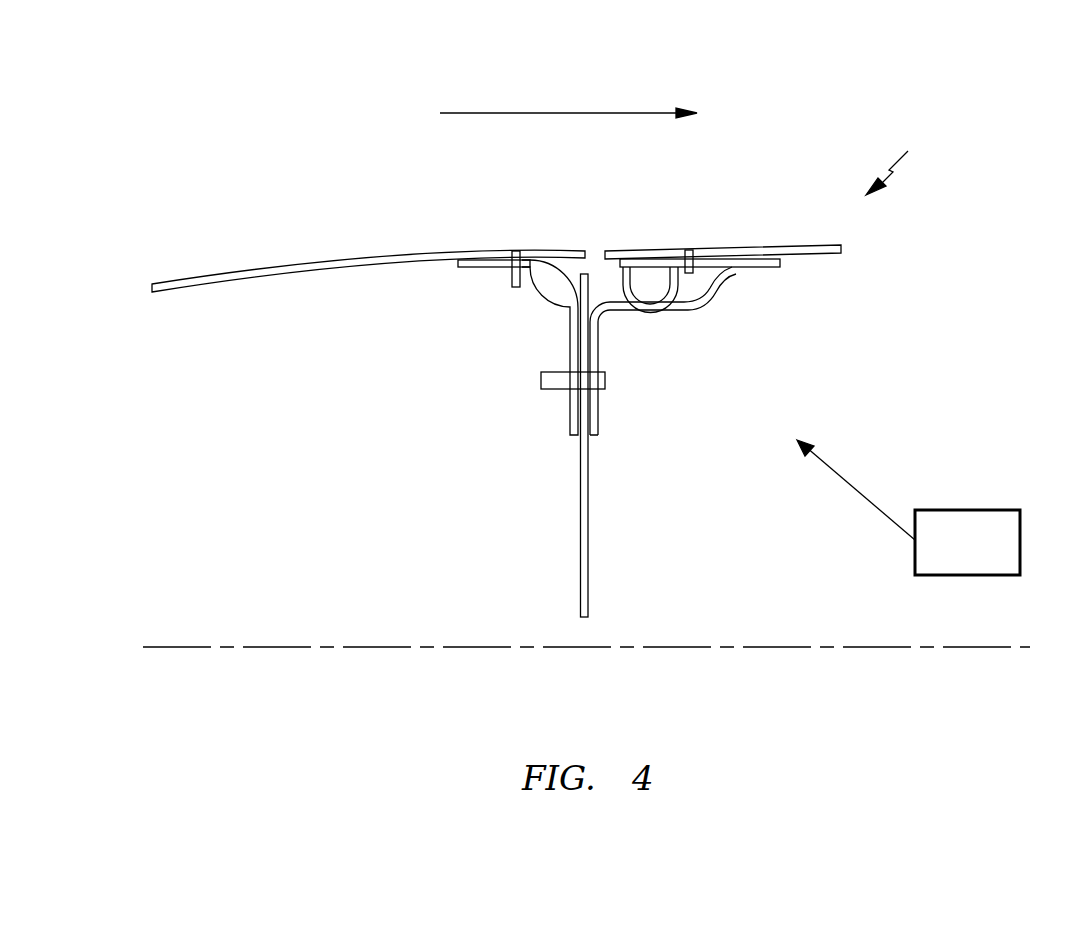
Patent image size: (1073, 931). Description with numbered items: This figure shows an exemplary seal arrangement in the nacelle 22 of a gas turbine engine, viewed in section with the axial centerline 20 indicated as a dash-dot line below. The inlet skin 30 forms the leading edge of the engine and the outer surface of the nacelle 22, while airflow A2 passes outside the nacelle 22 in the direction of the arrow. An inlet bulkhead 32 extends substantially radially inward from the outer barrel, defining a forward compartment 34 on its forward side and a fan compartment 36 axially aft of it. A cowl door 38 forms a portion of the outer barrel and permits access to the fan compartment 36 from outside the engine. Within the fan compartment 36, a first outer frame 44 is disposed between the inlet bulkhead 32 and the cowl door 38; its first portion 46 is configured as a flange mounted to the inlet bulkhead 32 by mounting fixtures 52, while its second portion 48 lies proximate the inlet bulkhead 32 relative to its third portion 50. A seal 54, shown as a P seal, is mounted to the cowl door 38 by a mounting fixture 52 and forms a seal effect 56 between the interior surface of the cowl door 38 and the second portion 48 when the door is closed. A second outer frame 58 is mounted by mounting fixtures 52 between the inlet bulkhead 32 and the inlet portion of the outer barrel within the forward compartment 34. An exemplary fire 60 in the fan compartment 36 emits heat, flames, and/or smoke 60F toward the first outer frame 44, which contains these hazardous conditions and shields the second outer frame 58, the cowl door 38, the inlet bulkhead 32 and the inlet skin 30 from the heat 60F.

The airflow A2 is at (545, 112).
The axial centerline 20 is at (990, 656).
The nacelle 22 is at (900, 161).
The inlet skin 30 is at (334, 251).
The inlet bulkhead 32 is at (588, 556).
The forward compartment 34 is at (358, 489).
The fan compartment 36 is at (796, 516).
The cowl door 38 is at (772, 246).
The first outer frame 44 is at (767, 268).
The first portion 46 is at (607, 352).
The second portion 48 is at (667, 320).
The third portion 50 is at (742, 290).
The mounting fixtures 52 is at (688, 249).
The seal 54 is at (683, 293).
The seal effect 56 is at (618, 294).
The second outer frame 58 is at (476, 268).
The fire 60 is at (955, 553).
The heat, flames, and/or smoke 60F is at (846, 478).